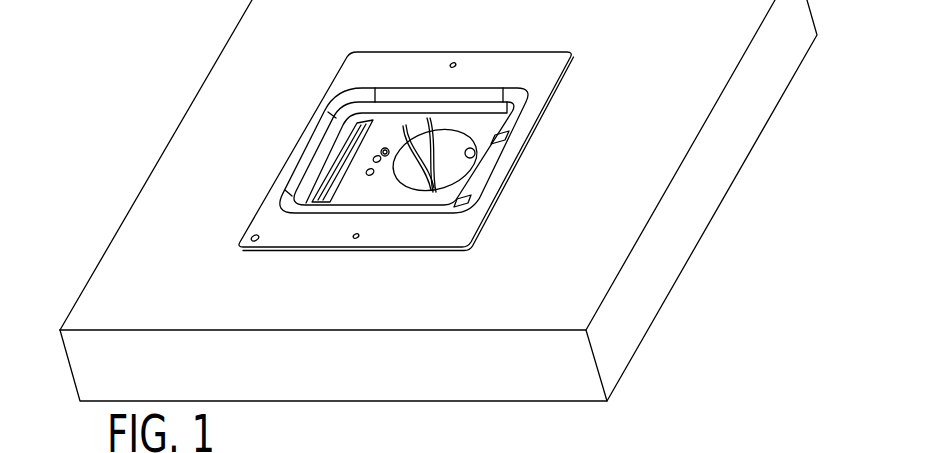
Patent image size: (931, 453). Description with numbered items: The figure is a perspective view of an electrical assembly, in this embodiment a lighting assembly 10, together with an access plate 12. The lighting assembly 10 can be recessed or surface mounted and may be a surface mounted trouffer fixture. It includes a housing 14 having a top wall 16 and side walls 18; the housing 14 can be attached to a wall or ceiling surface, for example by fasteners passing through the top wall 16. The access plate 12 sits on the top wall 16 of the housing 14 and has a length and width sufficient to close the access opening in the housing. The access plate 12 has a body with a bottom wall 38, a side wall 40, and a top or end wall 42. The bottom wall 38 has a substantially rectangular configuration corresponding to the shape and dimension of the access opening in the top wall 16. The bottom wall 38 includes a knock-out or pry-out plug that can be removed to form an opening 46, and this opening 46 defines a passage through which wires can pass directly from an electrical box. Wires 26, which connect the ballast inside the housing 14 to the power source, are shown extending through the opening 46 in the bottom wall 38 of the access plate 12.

The lighting assembly 10 is at (177, 82).
The access plate 12 is at (578, 50).
The housing 14 is at (117, 225).
The top wall 16 is at (598, 225).
The side walls 18 is at (622, 298).
The wires 26 is at (432, 164).
The bottom wall 38 is at (467, 127).
The side wall 40 is at (412, 95).
The top wall 42 is at (347, 80).
The opening 46 is at (463, 152).